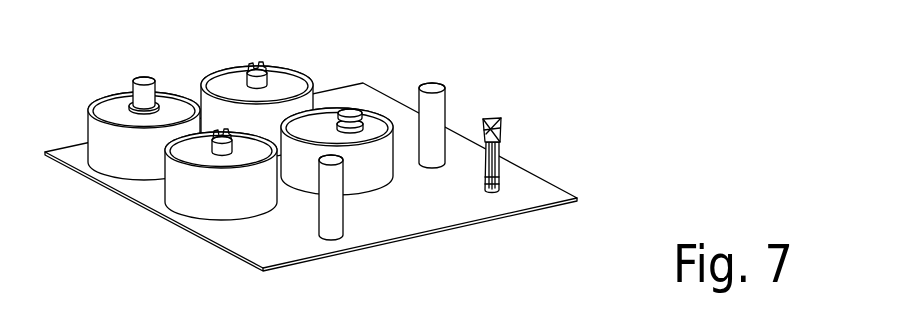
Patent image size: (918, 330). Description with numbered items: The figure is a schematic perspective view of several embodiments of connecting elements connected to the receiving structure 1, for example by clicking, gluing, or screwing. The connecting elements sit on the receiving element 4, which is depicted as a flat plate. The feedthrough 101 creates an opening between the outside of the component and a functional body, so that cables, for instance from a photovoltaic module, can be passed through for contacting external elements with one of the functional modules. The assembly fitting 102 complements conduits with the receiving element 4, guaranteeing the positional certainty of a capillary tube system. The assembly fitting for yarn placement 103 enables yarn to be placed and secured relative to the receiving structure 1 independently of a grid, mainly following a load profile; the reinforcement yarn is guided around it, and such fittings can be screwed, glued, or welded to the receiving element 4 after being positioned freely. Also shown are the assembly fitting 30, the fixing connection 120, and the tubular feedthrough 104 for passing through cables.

The receiving structure 1 is at (327, 142).
The receiving element 4 is at (98, 152).
The assembly fitting 30 is at (502, 143).
The feedthrough 101 is at (138, 78).
The assembly fitting 102 is at (250, 65).
The assembly fitting for yarn placement 103 is at (352, 110).
The tubular feedthrough 104 is at (332, 217).
The fixing connection 120 is at (443, 88).